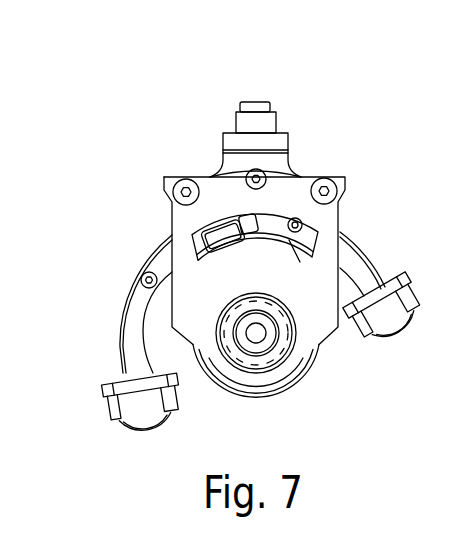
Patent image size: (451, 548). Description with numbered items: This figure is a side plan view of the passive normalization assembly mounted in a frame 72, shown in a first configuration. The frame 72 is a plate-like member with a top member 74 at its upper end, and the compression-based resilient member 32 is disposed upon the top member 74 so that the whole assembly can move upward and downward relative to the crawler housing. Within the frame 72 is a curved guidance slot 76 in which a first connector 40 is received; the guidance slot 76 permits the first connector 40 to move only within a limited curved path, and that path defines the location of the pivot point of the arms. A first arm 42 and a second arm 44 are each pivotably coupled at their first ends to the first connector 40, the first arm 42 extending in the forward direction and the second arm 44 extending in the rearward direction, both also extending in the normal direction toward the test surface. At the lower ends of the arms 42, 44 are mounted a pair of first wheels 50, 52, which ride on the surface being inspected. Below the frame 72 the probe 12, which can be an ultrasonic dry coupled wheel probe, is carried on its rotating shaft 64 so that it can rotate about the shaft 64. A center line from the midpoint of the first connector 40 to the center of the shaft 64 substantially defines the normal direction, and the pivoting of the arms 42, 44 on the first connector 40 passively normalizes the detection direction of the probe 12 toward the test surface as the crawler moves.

The probe 12 is at (303, 378).
The compression-based resilient member 32 is at (253, 102).
The first connector 40 is at (222, 237).
The first arm 42 is at (358, 272).
The second arm 44 is at (128, 343).
The first wheel 50 is at (390, 343).
The first wheel 52 is at (140, 435).
The rotating shaft 64 is at (257, 340).
The frame 72 is at (328, 220).
The top member 74 is at (278, 123).
The guidance slot 76 is at (283, 239).